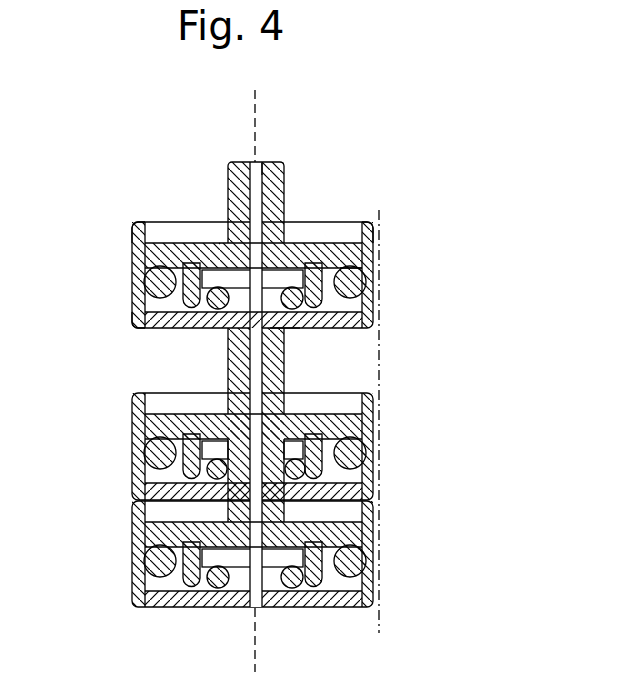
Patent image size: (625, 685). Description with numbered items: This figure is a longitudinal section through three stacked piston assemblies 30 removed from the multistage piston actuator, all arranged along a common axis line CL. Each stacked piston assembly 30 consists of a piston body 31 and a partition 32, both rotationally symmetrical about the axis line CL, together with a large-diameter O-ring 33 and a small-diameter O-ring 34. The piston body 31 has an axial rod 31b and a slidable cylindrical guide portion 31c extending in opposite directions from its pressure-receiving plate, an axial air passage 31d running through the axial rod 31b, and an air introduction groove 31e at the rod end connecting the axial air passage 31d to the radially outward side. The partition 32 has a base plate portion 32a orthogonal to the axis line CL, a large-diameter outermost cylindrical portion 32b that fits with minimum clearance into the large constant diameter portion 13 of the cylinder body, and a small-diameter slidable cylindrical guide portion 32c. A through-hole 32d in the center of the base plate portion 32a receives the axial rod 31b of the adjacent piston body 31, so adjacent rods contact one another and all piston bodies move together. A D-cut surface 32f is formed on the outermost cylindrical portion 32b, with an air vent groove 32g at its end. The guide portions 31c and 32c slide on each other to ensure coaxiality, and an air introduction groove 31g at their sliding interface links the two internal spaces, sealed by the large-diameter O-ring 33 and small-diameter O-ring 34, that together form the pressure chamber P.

The large constant diameter portion 13 is at (376, 215).
The stacked piston assembly 30 is at (73, 157).
The piston body 31 is at (270, 349).
The axial rod 31b is at (286, 175).
The slidable cylindrical guide portion 31c is at (157, 328).
The axial air passage 31d is at (250, 162).
The air introduction groove 31e is at (262, 163).
The air introduction groove 31g is at (352, 283).
The partition 32 is at (172, 219).
The base plate portion 32a is at (138, 321).
The large-diameter outermost cylindrical portion 32b is at (134, 232).
The slidable cylindrical guide portion 32c is at (196, 262).
The through-hole 32d is at (278, 332).
The D-cut surface 32f is at (370, 258).
The air vent groove 32g is at (378, 226).
The large-diameter O-ring 33 is at (148, 281).
The small-diameter O-ring 34 is at (214, 328).
The pressure chamber P is at (220, 243).
The axis line CL is at (257, 671).